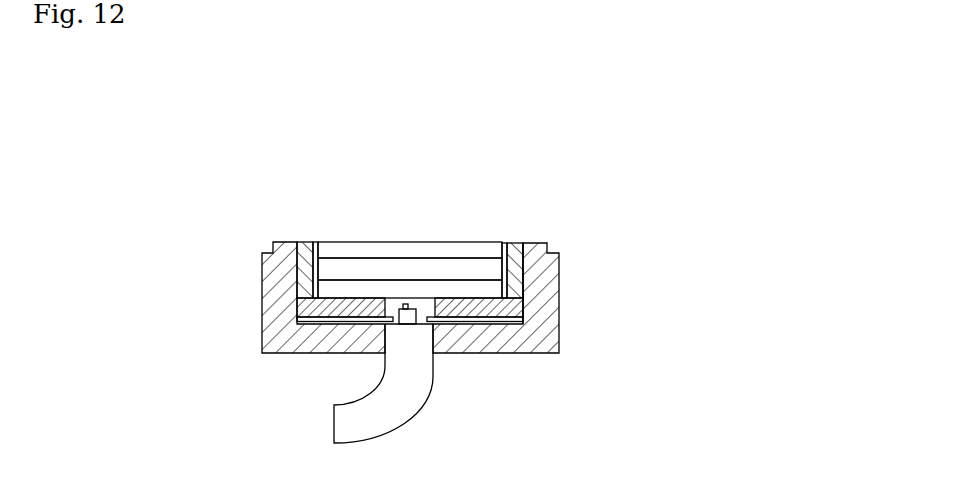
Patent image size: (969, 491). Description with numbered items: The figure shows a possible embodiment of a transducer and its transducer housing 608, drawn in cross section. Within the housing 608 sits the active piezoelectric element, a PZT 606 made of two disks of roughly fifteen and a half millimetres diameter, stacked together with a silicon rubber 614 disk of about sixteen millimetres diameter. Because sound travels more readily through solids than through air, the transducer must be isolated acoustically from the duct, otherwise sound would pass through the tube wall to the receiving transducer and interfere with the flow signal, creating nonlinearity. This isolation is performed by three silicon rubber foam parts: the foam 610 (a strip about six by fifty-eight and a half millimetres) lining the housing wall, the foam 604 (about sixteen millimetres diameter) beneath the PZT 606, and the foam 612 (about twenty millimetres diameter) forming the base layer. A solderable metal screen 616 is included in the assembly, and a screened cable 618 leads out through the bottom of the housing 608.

The silicon rubber foam 604 is at (326, 286).
The PZT 606 is at (399, 268).
The transducer housing 608 is at (260, 260).
The silicon rubber foam 610 is at (300, 267).
The silicon rubber foam 612 is at (350, 298).
The silicon rubber 614 is at (435, 253).
The metal screen 616 is at (525, 318).
The screened cable 618 is at (365, 393).